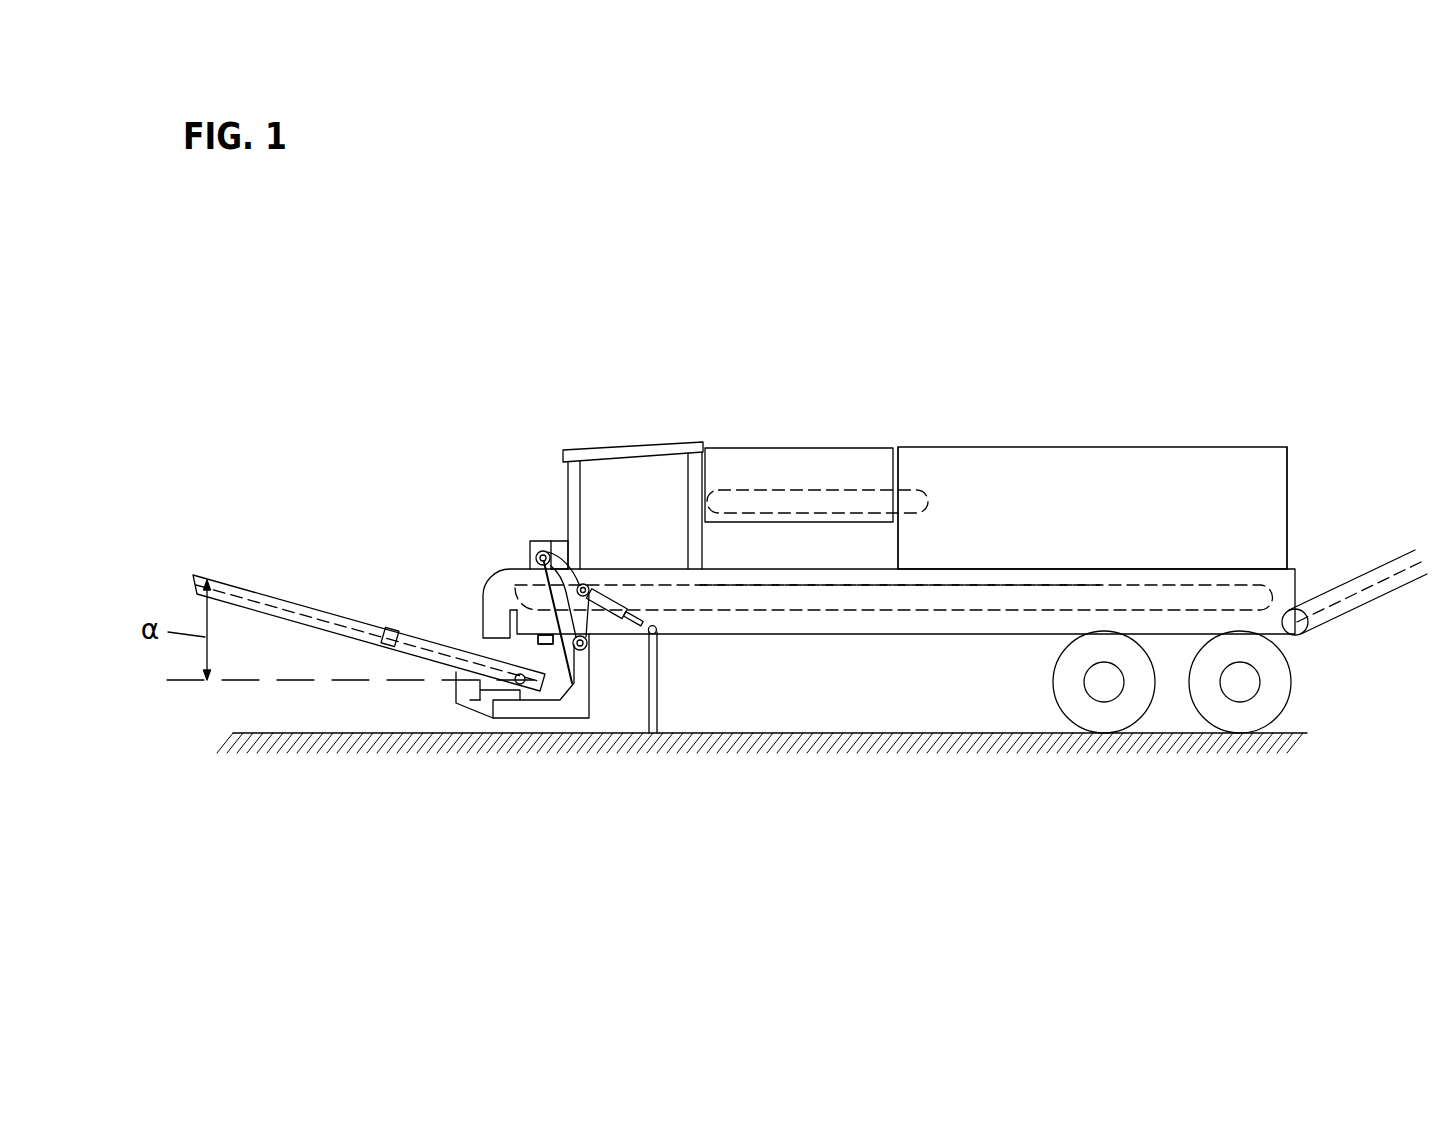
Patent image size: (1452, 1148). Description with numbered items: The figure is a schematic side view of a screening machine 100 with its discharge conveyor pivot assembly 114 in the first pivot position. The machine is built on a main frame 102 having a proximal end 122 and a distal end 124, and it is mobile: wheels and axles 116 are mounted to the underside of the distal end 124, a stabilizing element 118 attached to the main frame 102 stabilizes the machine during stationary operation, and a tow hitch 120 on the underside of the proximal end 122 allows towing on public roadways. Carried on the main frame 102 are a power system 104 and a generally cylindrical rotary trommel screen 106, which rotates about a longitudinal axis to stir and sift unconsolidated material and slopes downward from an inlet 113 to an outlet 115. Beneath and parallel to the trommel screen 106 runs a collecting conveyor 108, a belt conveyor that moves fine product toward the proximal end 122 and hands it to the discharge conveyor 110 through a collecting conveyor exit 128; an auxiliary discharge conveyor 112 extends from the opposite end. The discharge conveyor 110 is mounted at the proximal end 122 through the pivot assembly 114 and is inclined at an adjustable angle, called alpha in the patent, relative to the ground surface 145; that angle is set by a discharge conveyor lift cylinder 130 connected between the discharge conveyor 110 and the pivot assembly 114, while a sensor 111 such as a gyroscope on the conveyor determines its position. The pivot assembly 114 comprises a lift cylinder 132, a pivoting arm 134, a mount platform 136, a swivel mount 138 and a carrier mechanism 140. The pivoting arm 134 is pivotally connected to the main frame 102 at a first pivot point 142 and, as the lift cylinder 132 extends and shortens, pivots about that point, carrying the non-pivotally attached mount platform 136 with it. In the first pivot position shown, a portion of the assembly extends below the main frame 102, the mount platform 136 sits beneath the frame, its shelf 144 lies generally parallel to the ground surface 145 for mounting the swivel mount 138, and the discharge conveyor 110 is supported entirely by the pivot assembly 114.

The screening machine 100 is at (1146, 227).
The main frame 102 is at (878, 625).
The power system 104 is at (663, 495).
The rotary trommel screen 106 is at (1113, 450).
The collecting conveyor 108 is at (1195, 585).
The discharge conveyor 110 is at (218, 583).
The sensor 111 is at (391, 631).
The auxiliary discharge conveyor 112 is at (1360, 588).
The inlet 113 is at (907, 441).
The discharge conveyor pivot assembly 114 is at (604, 694).
The outlet 115 is at (1294, 441).
The wheels and axles 116 is at (1052, 718).
The stabilizing element 118 is at (657, 673).
The tow hitch 120 is at (547, 643).
The proximal end 122 is at (352, 396).
The distal end 124 is at (1302, 354).
The collecting conveyor exit 128 is at (533, 568).
The discharge conveyor lift cylinder 130 is at (455, 678).
The lift cylinder 132 is at (598, 597).
The pivoting arm 134 is at (500, 582).
The mount platform 136 is at (552, 712).
The swivel mount 138 is at (508, 695).
The carrier mechanism 140 is at (483, 680).
The first pivot point 142 is at (546, 573).
The shelf 144 is at (532, 703).
The ground surface 145 is at (330, 745).